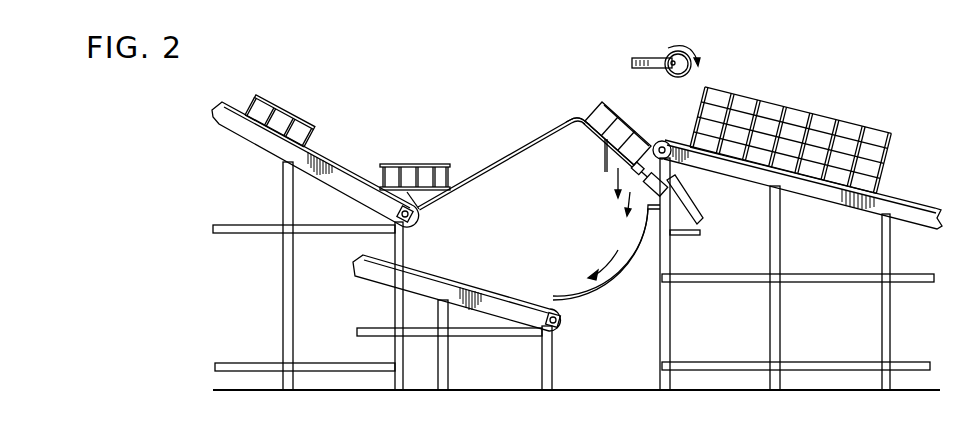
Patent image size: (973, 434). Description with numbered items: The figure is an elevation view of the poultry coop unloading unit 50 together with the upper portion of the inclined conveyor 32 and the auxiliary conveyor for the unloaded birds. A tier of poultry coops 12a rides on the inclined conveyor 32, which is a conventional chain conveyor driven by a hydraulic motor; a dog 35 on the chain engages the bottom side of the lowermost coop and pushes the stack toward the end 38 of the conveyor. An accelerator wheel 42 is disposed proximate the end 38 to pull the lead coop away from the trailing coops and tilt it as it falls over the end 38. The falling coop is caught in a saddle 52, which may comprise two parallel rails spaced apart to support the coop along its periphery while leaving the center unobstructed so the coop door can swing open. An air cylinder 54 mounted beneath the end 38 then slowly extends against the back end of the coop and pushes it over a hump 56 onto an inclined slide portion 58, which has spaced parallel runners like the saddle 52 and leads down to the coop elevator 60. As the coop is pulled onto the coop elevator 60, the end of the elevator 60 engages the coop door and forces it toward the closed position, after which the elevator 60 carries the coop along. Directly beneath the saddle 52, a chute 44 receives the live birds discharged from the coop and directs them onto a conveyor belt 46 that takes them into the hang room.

The tier of poultry coops 12a is at (798, 105).
The inclined conveyor 32 is at (807, 184).
The dog 35 is at (882, 192).
The end of inclined conveyor 38 is at (658, 141).
The accelerator wheel 42 is at (655, 57).
The chute 44 is at (630, 272).
The conveyor belt 46 is at (482, 287).
The poultry coop unloading unit 50 is at (537, 148).
The saddle 52 is at (594, 131).
The air cylinder 54 is at (690, 217).
The hump 56 is at (575, 113).
The inclined slide portion 58 is at (488, 168).
The coop elevator 60 is at (334, 161).